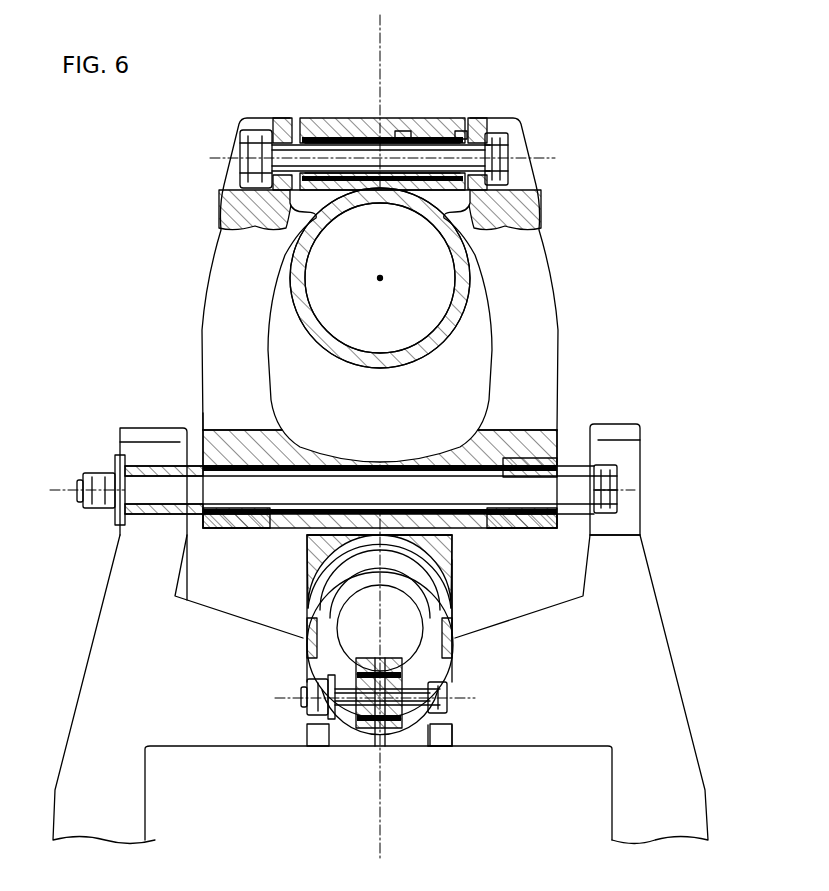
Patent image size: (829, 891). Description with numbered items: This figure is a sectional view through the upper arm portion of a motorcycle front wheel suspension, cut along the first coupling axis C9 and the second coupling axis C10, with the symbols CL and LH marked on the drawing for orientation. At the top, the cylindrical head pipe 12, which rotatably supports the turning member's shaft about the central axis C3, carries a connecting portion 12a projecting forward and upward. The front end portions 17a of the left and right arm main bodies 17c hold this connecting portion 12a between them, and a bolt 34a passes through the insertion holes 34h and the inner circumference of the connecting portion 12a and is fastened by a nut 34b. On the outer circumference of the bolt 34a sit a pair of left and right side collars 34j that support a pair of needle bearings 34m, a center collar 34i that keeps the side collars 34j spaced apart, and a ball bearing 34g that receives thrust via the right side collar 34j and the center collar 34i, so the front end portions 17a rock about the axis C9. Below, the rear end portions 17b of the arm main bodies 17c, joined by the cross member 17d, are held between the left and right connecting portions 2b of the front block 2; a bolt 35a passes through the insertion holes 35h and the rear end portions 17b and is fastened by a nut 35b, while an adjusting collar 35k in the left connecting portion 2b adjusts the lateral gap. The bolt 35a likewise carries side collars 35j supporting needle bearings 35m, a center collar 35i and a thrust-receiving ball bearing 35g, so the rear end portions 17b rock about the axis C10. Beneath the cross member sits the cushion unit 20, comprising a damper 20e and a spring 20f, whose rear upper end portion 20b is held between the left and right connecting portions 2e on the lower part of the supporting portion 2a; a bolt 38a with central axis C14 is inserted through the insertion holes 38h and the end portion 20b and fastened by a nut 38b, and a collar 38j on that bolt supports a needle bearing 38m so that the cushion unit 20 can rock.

The front block 2 is at (672, 630).
The supporting portion 2a is at (482, 775).
The connecting portions 2b is at (120, 430).
The connecting portions 2e is at (452, 750).
The head pipe 12 is at (477, 285).
The connecting portion 12a is at (417, 120).
The front end portions 17a is at (262, 118).
The rear end portions 17b is at (205, 442).
The arm main bodies 17c is at (204, 325).
The cross member 17d is at (395, 459).
The cushion unit 20 is at (530, 558).
The rear upper end portion 20b is at (360, 740).
The damper 20e is at (452, 590).
The spring 20f is at (455, 545).
The bolt 34a is at (505, 148).
The nut 34b is at (240, 140).
The ball bearing 34g is at (398, 132).
The insertion hole 34h is at (470, 118).
The center collar 34i is at (366, 138).
The side collars 34j is at (340, 118).
The needle bearings 34m is at (325, 138).
The bolt 35a is at (618, 505).
The nut 35b is at (100, 470).
The ball bearing 35g is at (640, 538).
The insertion hole 35h is at (618, 480).
The center collar 35i is at (313, 540).
The side collars 35j is at (232, 530).
The adjusting collar 35k is at (118, 527).
The needle bearings 35m is at (260, 528).
The bolt 38a is at (405, 730).
The nut 38b is at (310, 718).
The insertion hole 38h is at (442, 716).
The collar 38j is at (387, 746).
The needle bearing 38m is at (375, 746).
The central axis C3 is at (383, 277).
The central axis C9 is at (550, 158).
The central axis C10 is at (635, 490).
The central axis C14 is at (282, 705).
The vehicle center line CL is at (385, 42).
The left-hand direction LH is at (342, 21).